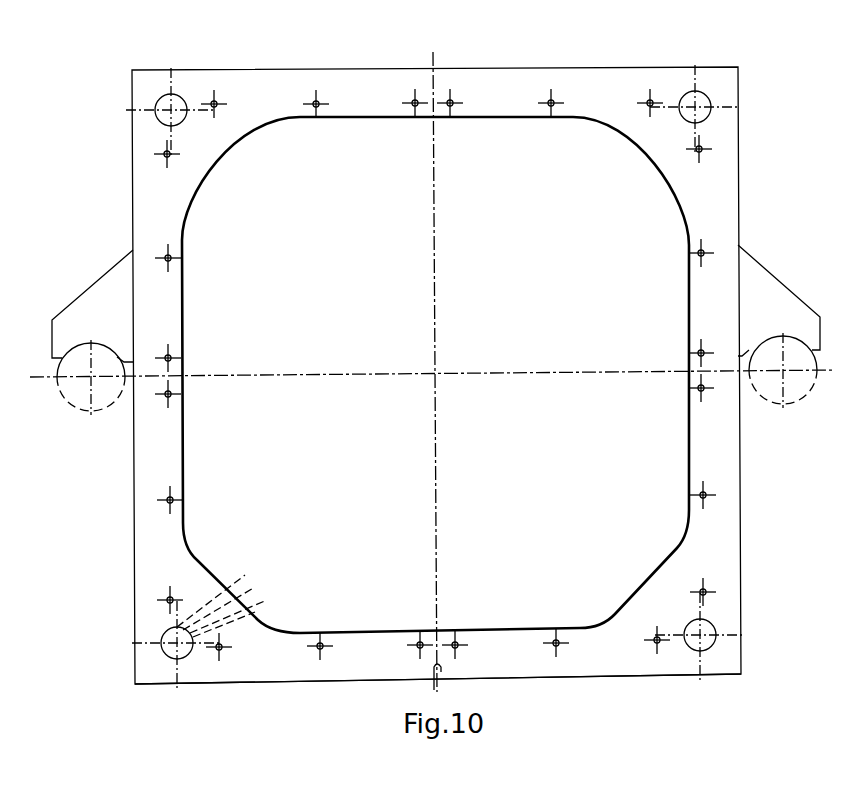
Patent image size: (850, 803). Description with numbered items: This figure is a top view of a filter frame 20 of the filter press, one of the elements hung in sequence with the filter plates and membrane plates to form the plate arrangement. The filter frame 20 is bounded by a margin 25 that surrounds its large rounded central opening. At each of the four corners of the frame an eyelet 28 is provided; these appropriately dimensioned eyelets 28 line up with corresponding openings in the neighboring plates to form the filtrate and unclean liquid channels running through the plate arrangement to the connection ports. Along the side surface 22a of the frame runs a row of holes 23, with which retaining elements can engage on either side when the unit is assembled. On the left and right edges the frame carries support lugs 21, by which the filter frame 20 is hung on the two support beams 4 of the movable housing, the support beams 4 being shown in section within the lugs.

The filter frame 20 is at (545, 50).
The support lug 21 is at (105, 297).
The side surface 22a is at (582, 665).
The holes 23 is at (418, 649).
The margin 25 is at (342, 68).
The eyelets 28 is at (158, 100).
The support beams 4 is at (832, 395).